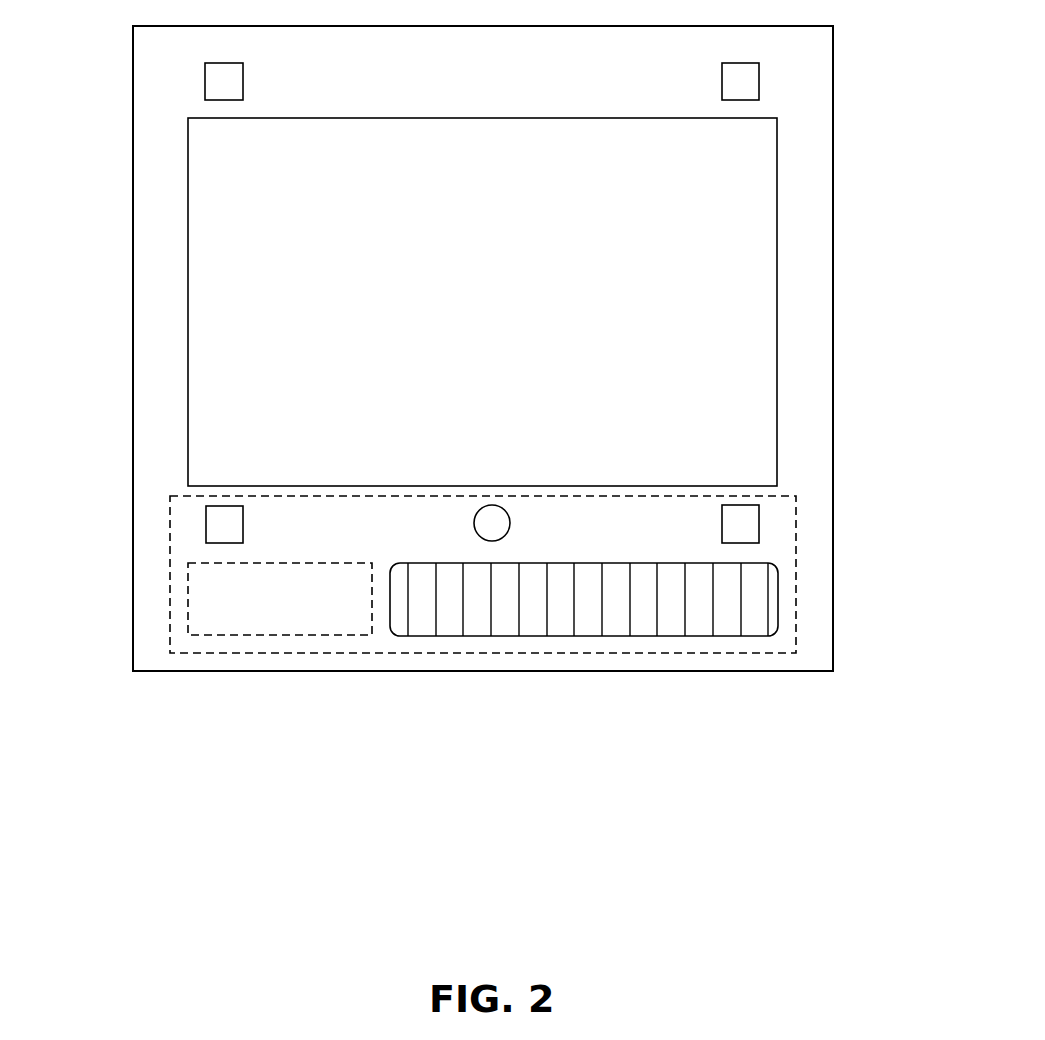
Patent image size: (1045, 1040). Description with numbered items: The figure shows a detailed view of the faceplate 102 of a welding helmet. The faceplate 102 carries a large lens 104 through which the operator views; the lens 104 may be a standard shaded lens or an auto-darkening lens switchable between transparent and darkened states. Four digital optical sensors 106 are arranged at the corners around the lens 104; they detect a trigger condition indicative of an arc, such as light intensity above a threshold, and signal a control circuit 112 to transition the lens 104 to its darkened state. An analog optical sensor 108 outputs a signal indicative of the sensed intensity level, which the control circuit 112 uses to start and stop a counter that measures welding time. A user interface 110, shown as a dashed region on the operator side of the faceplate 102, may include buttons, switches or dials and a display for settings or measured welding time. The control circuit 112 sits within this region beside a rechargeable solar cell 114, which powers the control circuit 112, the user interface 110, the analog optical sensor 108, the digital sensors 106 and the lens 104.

The faceplate 102 is at (133, 138).
The lens 104 is at (302, 283).
The digital optical sensors 106 is at (243, 80).
The analog optical sensor 108 is at (474, 517).
The user interface 110 is at (797, 519).
The control circuit 112 is at (188, 587).
The rechargeable solar cell 114 is at (778, 622).